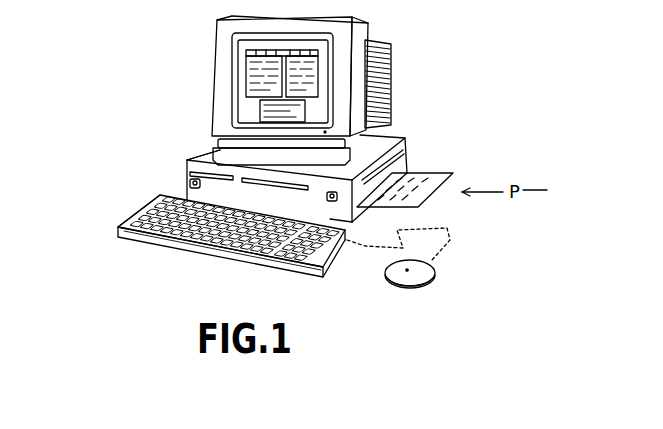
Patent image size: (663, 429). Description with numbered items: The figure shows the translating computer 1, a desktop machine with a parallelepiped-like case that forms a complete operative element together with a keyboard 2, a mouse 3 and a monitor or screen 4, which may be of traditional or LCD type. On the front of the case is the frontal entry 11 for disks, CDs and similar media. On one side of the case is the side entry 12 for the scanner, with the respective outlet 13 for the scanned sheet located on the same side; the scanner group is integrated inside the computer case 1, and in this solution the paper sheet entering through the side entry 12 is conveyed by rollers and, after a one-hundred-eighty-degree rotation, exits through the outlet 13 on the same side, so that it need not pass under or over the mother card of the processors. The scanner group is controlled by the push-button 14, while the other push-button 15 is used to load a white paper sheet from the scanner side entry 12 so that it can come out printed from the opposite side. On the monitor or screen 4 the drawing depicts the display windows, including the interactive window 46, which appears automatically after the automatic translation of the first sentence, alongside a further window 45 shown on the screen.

The computer 1 is at (190, 157).
The keyboard 2 is at (165, 250).
The mouse 3 is at (435, 283).
The monitor or screen 4 is at (242, 88).
The frontal entry for disks 11 is at (193, 175).
The side entry for scanner 12 is at (412, 168).
The outlet of the scanned sheet 13 is at (407, 140).
The push-button 14 is at (350, 240).
The push-button 15 is at (128, 217).
The screen window 45 is at (320, 65).
The interactive window 46 is at (307, 110).